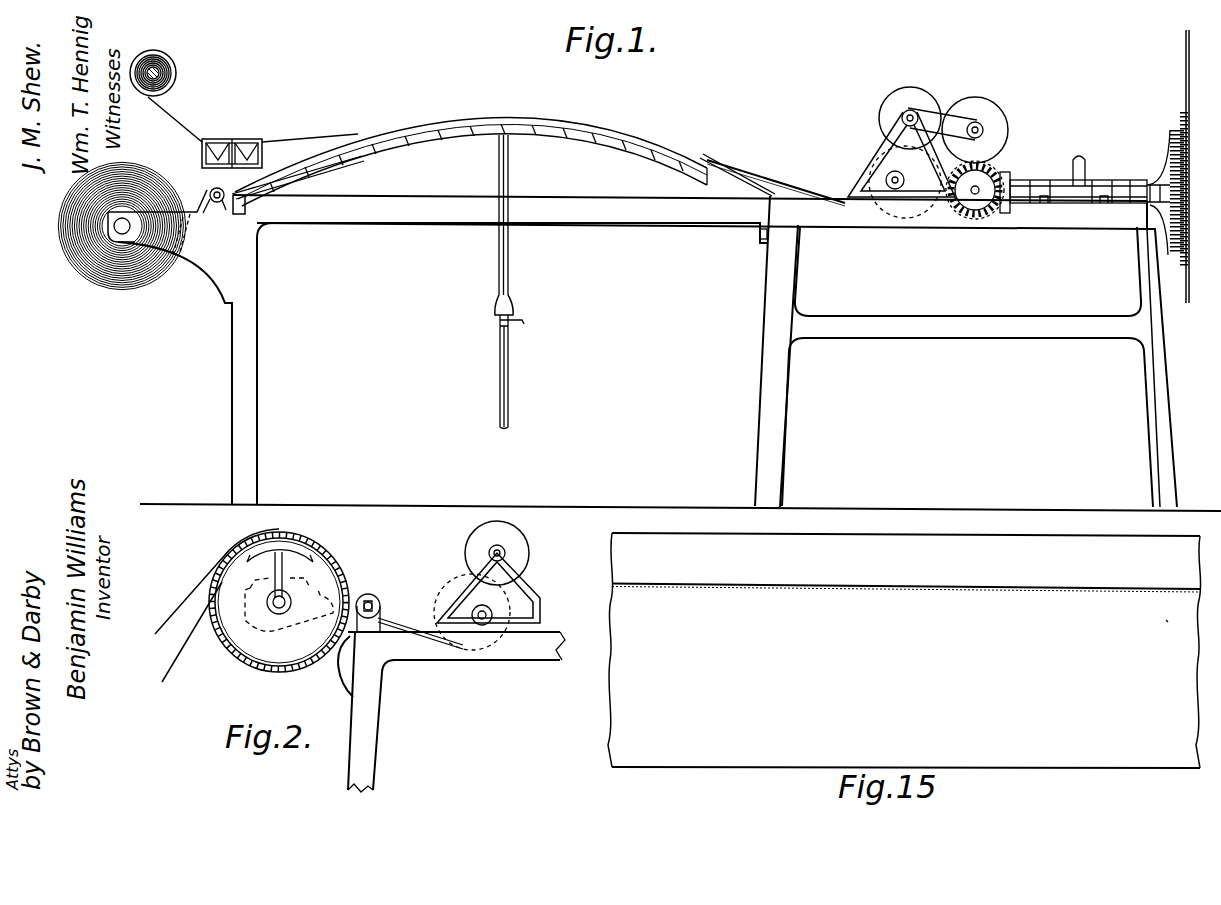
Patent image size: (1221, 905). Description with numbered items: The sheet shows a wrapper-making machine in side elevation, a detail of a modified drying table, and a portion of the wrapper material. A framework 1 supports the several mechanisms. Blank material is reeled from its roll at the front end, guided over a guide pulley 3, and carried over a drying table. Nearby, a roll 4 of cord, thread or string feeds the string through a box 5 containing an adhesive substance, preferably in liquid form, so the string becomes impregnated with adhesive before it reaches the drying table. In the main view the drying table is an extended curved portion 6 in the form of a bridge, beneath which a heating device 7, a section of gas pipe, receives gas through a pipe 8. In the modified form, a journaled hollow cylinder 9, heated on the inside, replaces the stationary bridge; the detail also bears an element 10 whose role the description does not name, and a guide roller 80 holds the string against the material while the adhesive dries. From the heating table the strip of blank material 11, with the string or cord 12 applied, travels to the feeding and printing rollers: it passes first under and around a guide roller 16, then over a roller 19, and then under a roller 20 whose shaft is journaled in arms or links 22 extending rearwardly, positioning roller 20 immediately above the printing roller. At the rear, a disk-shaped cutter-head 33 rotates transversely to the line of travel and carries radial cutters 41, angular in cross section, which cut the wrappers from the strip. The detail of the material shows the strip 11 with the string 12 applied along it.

In FIG. 1, the framework 1 is at (262, 362).
In FIG. 1, the guide pulley 3 is at (211, 190).
In FIG. 1, the roll of cord, thread or string 4 is at (160, 73).
In FIG. 1, the box 5 is at (240, 139).
In FIG. 1, the curved portion / drying table 6 is at (288, 168).
In FIG. 1, the heating device 7 is at (553, 148).
In FIG. 1, the pipe 8 is at (511, 290).
In FIG. 2, the hollow cylinder 9 is at (224, 642).
In FIG. 2, the stem 10 is at (276, 566).
In FIG. 1, the strip of blank material 11 is at (276, 160).
In FIG. 2, the strip of blank material 11 is at (190, 642).
In FIG. 15, the strip of blank material 11 is at (1174, 633).
In FIG. 1, the string or cord 12 is at (202, 140).
In FIG. 2, the string or cord 12 is at (188, 610).
In FIG. 15, the string or cord 12 is at (1036, 592).
In FIG. 2, the guide roller 16 is at (462, 602).
In FIG. 1, the roller 19 is at (902, 100).
In FIG. 2, the roller 19 is at (478, 540).
In FIG. 1, the roller 20 is at (988, 112).
In FIG. 1, the arms or links 22 is at (944, 114).
In FIG. 1, the cutter-head 33 is at (1182, 160).
In FIG. 1, the cutter 41 is at (1190, 62).
In FIG. 2, the guide roller 80 is at (376, 597).